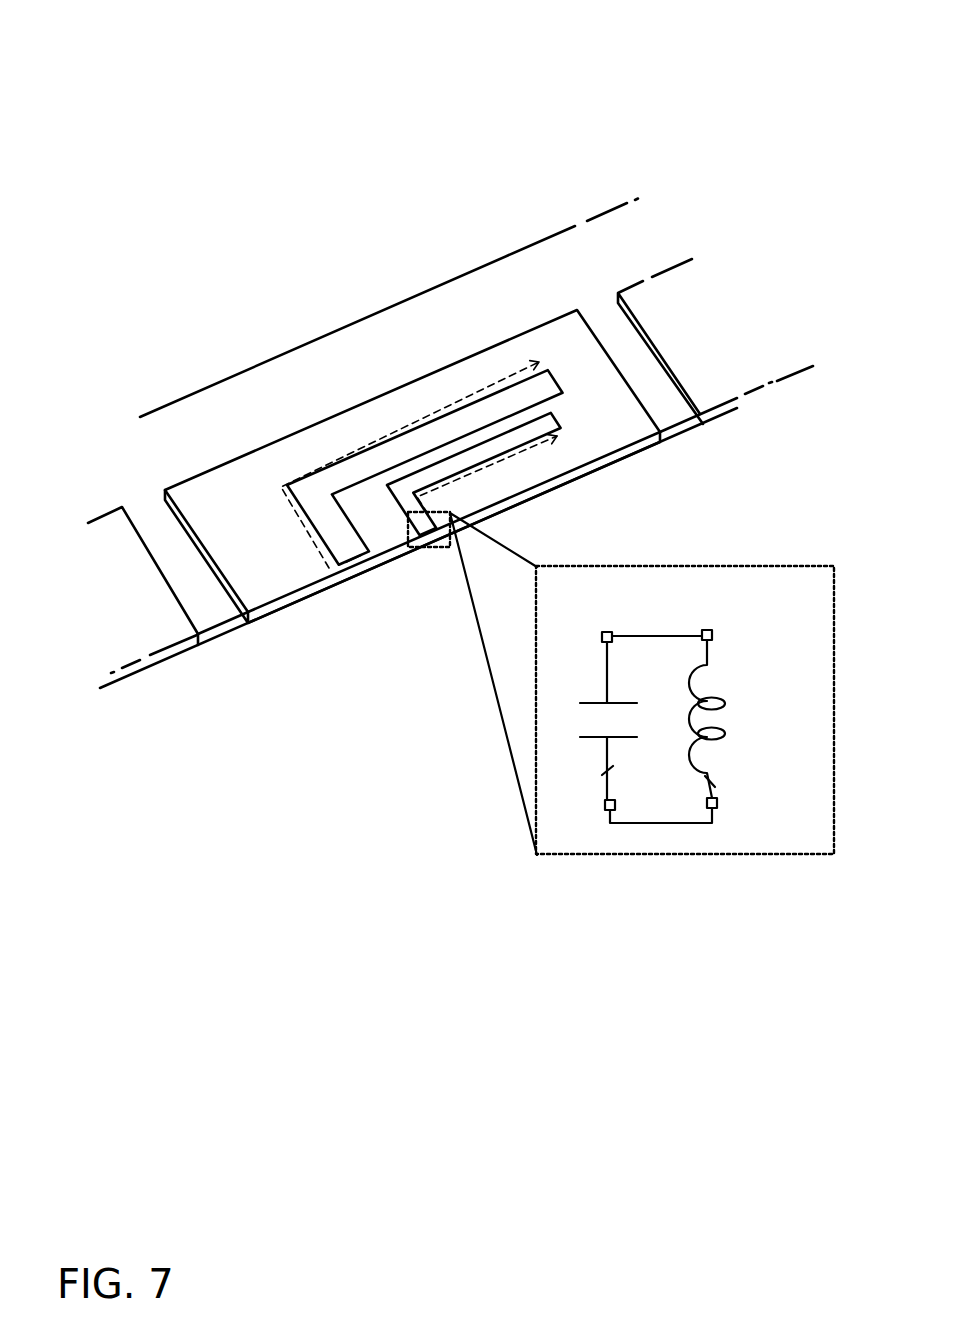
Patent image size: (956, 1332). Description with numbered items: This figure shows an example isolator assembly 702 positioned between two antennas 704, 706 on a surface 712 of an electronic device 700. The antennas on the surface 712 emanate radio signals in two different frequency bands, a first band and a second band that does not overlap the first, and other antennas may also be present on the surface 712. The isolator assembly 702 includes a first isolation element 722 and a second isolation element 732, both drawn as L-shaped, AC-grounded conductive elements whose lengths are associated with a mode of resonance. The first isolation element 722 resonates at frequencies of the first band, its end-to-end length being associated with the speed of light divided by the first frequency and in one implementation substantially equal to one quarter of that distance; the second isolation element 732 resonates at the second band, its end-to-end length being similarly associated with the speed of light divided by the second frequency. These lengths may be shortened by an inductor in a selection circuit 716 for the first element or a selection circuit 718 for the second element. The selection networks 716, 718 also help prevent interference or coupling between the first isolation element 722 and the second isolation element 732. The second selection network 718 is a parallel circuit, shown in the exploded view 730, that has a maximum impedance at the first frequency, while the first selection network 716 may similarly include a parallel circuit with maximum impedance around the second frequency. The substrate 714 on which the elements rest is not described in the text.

The electronic device 700 is at (138, 60).
The isolator assembly 702 is at (404, 448).
The antenna 704 is at (101, 523).
The antenna 706 is at (683, 295).
The surface 712 is at (463, 313).
The substrate 714 is at (243, 505).
The selection circuit 716 is at (353, 557).
The selection circuit 718 is at (422, 522).
The first isolation element 722 is at (357, 475).
The exploded view 730 is at (677, 565).
The second isolation element 732 is at (482, 450).